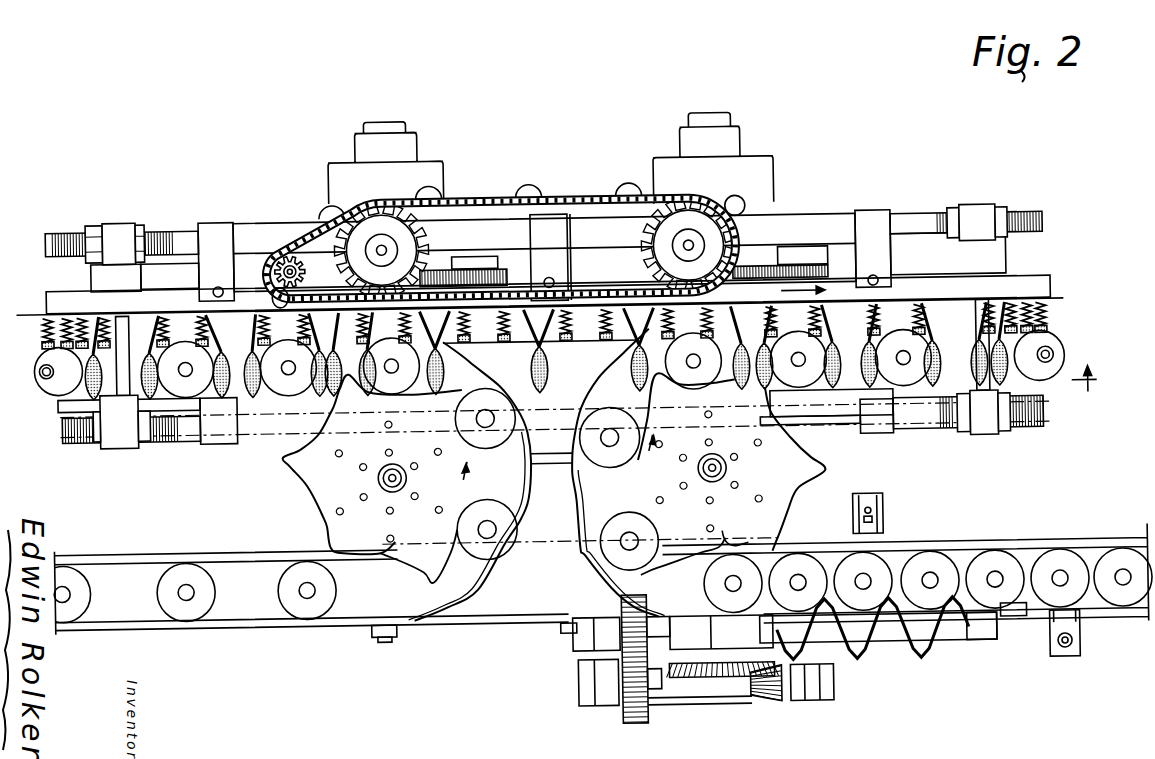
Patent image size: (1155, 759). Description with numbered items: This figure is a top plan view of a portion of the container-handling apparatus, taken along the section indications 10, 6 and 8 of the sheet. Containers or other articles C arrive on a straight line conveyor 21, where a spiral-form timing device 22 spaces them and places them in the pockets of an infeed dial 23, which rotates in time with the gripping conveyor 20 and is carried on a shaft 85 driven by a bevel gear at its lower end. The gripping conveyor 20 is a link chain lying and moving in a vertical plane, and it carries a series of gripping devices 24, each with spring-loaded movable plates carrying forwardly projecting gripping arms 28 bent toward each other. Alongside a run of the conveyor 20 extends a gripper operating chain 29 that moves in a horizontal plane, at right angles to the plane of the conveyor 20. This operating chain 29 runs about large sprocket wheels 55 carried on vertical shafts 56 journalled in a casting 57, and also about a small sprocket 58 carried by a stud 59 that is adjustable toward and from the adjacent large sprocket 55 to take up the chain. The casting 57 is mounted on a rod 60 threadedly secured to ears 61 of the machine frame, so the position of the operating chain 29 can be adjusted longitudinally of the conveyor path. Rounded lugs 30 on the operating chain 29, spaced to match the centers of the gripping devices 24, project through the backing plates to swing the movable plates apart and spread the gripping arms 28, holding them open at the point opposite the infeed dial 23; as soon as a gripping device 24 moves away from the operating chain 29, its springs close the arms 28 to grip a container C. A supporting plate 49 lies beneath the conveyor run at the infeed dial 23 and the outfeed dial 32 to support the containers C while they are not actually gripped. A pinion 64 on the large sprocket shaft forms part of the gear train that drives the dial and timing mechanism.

The section line / housing 10 is at (713, 170).
The casting 57 is at (283, 234).
The ears 61 is at (110, 279).
The small sprocket 58 is at (277, 265).
The stud 59 is at (275, 285).
The gripping conveyor 20 is at (256, 317).
The sprocket wheels 55 is at (422, 226).
The vertical shafts 56 is at (386, 249).
The lugs 30 is at (532, 190).
The gripping device operating chain 29 is at (570, 199).
The rod 60 is at (906, 225).
The pinion 64 is at (840, 257).
The section line 6 is at (1093, 385).
The gripping devices 24 is at (830, 372).
The gripping arms 28 is at (935, 375).
The dimension 8 is at (58, 396).
The supporting plate 49 is at (263, 410).
The outfeed dial 32 is at (272, 468).
The shaft 85 is at (718, 474).
The infeed dial 23 is at (819, 455).
The straight line conveyor 21 is at (965, 553).
The timing device 22 is at (893, 644).
The containers C is at (1050, 351).